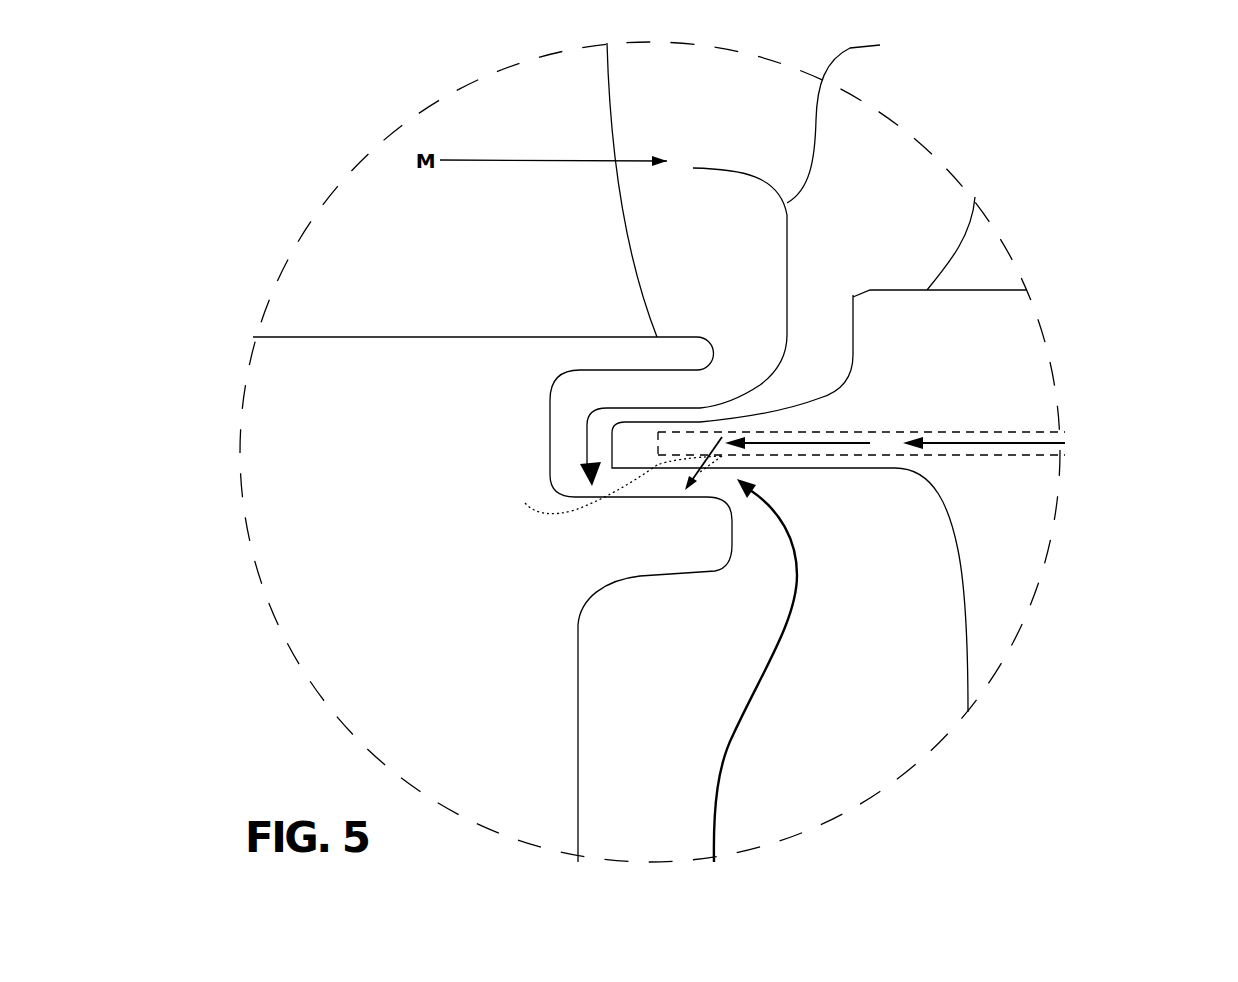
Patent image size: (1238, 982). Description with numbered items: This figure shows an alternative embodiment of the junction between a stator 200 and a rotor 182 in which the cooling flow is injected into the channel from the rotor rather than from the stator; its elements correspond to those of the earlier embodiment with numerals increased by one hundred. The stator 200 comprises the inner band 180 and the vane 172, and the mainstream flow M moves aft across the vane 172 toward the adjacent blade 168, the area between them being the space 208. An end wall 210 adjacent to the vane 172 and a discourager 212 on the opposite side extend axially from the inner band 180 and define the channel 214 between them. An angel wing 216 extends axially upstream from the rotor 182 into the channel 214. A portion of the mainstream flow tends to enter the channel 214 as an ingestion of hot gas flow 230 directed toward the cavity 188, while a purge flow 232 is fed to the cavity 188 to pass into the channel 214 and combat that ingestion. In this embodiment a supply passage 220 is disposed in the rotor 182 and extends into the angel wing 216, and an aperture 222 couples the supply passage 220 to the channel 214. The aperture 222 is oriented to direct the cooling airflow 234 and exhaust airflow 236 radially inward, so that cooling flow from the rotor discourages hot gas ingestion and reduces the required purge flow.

The blade 168 is at (987, 260).
The vane 172 is at (452, 221).
The inner band 180 is at (340, 416).
The rotor 182 is at (985, 561).
The cavity 188 is at (625, 801).
The stator 200 is at (427, 248).
The space 208 is at (728, 137).
The end wall 210 is at (710, 332).
The discourager 212 is at (730, 558).
The channel 214 is at (577, 398).
The angel wing 216 is at (815, 470).
The supply passage 220 is at (1000, 427).
The aperture 222 is at (611, 485).
The hot gas flow 230 is at (859, 118).
The purge flow 232 is at (740, 723).
The cooling airflow 234 is at (835, 440).
The exhaust airflow 236 is at (710, 470).